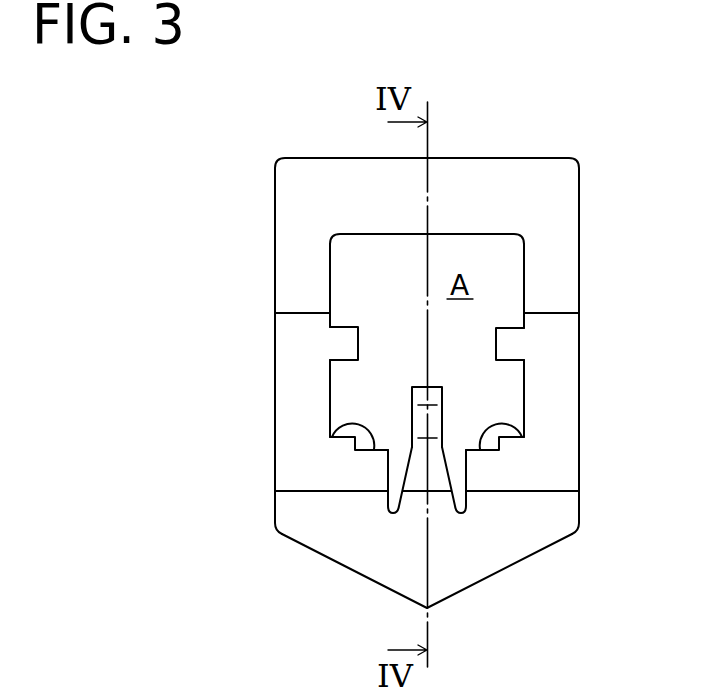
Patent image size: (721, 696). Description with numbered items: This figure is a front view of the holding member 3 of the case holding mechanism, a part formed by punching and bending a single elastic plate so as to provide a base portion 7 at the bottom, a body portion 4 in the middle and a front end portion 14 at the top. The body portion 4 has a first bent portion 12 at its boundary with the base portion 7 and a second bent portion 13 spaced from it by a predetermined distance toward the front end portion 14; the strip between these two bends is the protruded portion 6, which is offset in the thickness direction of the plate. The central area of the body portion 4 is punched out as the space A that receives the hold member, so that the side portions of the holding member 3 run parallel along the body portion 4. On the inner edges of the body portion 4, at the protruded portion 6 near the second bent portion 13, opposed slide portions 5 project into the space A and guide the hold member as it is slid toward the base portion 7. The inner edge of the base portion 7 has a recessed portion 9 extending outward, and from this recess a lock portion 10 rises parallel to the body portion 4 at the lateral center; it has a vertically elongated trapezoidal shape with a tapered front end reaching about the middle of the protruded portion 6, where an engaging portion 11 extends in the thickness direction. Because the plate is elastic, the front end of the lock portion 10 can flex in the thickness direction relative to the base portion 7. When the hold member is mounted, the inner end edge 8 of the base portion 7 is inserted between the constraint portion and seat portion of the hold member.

The holding member 3 is at (589, 184).
The body portion 4 is at (295, 410).
The slide portions 5 is at (340, 347).
The protruded portion 6 is at (317, 390).
The base portion 7 is at (500, 560).
The inner end edge 8 is at (333, 433).
The recessed portion 9 is at (466, 503).
The lock portion 10 is at (443, 417).
The engaging portion 11 is at (420, 418).
The first bent portion 12 is at (320, 492).
The second bent portion 13 is at (297, 328).
The front end portion 14 is at (308, 177).